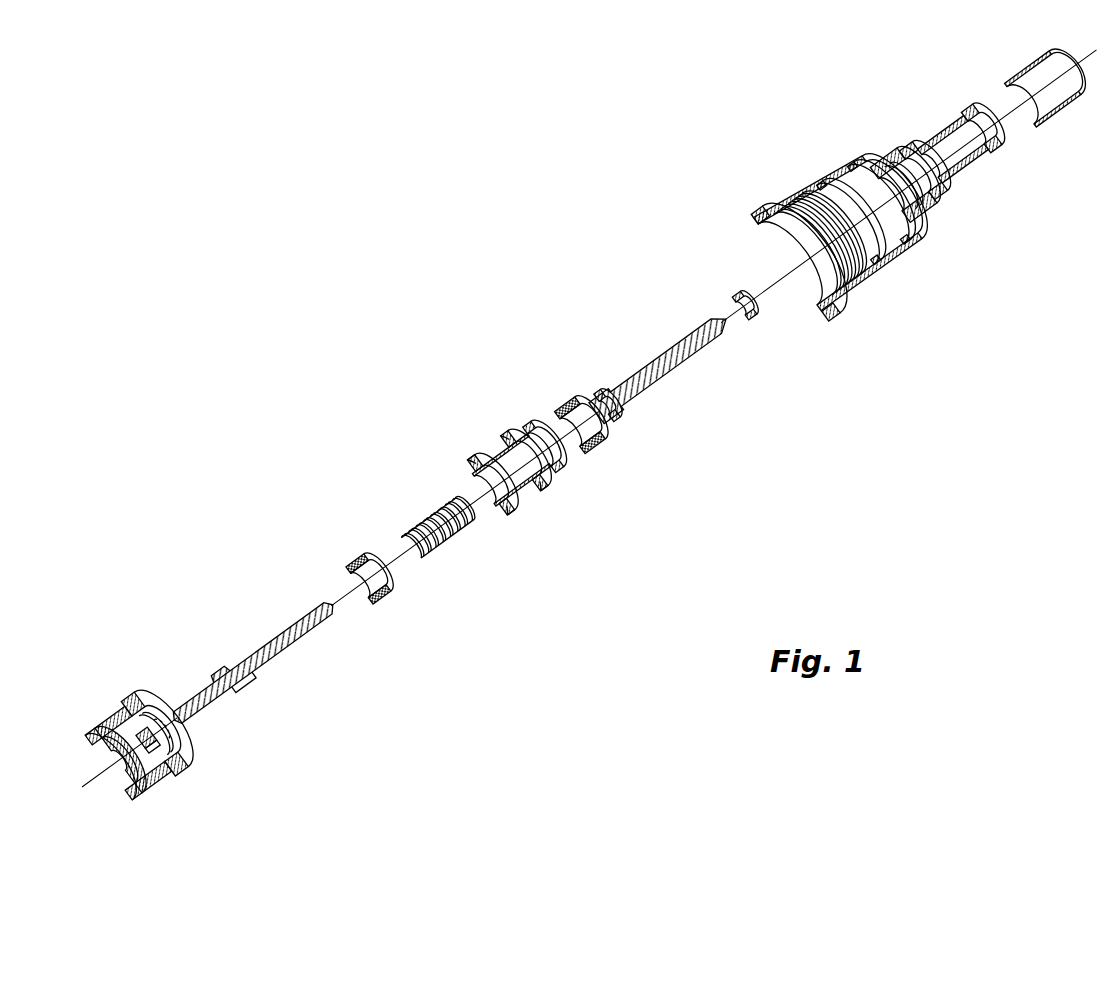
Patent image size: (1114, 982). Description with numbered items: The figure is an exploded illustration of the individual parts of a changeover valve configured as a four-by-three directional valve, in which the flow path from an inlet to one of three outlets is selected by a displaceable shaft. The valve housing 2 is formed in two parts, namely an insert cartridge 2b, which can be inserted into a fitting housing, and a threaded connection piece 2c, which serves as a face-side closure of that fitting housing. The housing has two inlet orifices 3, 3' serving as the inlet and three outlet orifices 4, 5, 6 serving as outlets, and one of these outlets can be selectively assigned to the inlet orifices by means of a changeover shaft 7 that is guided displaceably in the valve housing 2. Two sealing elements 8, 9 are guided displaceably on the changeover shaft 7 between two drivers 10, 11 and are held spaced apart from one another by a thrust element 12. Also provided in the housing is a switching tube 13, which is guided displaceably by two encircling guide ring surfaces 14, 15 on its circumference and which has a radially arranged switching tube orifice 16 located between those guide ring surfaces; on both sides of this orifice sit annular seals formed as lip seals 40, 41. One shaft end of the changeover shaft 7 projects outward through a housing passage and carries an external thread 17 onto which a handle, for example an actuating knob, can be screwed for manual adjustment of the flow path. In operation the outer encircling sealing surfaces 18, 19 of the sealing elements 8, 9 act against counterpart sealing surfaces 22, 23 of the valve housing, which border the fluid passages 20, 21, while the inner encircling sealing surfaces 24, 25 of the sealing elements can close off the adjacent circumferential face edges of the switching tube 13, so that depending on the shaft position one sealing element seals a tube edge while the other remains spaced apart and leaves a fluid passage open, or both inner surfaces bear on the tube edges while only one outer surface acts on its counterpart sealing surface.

The valve housing 2 is at (952, 142).
The insert cartridge 2b is at (756, 205).
The threaded connection piece 2c is at (102, 690).
The inlet orifice 3 is at (858, 278).
The inlet orifice 3' is at (920, 210).
The outlet orifice 4 is at (86, 752).
The outlet orifice 5 is at (872, 238).
The outlet orifice 6 is at (908, 176).
The changeover shaft 7 is at (275, 642).
The sealing element 8 is at (344, 548).
The sealing element 9 is at (565, 398).
The driver 10 is at (219, 662).
The driver 11 is at (609, 388).
The thrust element 12 is at (442, 544).
The switching tube 13 is at (484, 432).
The guide ring surface 14 is at (458, 442).
The guide ring surface 15 is at (558, 497).
The switching tube orifice 16 is at (526, 500).
The external thread 17 is at (724, 342).
The encircling sealing surface 18 is at (373, 606).
The encircling sealing surface 19 is at (610, 439).
The fluid passage 20 is at (147, 713).
The fluid passage 21 is at (872, 196).
The counterpart sealing surface 22 is at (170, 739).
The counterpart sealing surface 23 is at (892, 184).
The inner encircling sealing surface 24 is at (367, 546).
The inner encircling sealing surface 25 is at (586, 456).
The lip seal 40 is at (462, 463).
The lip seal 41 is at (510, 422).